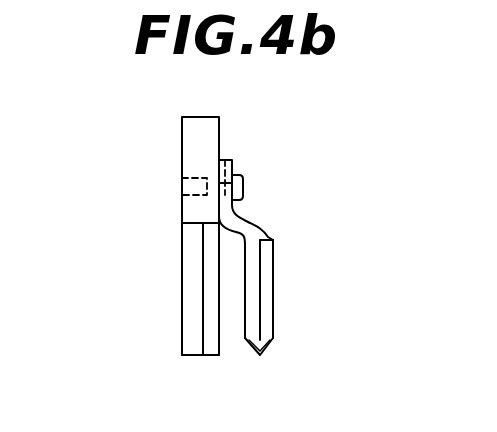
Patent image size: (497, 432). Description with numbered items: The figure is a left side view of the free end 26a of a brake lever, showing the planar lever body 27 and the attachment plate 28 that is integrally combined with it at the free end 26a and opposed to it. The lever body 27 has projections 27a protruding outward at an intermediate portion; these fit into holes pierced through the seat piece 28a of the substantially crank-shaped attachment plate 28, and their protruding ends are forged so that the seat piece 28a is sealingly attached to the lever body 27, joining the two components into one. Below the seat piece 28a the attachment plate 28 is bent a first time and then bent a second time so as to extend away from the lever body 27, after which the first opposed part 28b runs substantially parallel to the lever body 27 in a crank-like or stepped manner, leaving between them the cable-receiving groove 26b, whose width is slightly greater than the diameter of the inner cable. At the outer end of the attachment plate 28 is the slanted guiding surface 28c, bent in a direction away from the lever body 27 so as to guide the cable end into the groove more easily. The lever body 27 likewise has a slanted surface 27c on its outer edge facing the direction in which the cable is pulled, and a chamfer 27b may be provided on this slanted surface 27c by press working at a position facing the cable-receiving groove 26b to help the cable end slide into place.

The free end 26a is at (163, 213).
The cable-receiving groove 26b is at (235, 330).
The lever body 27 is at (203, 142).
The projections 27a is at (228, 155).
The chamfer 27b is at (208, 345).
The slanted surface 27c is at (186, 279).
The attachment plate 28 is at (254, 212).
The seat piece 28a is at (233, 162).
The first opposed part 28b is at (263, 226).
The guiding surface 28c is at (256, 283).